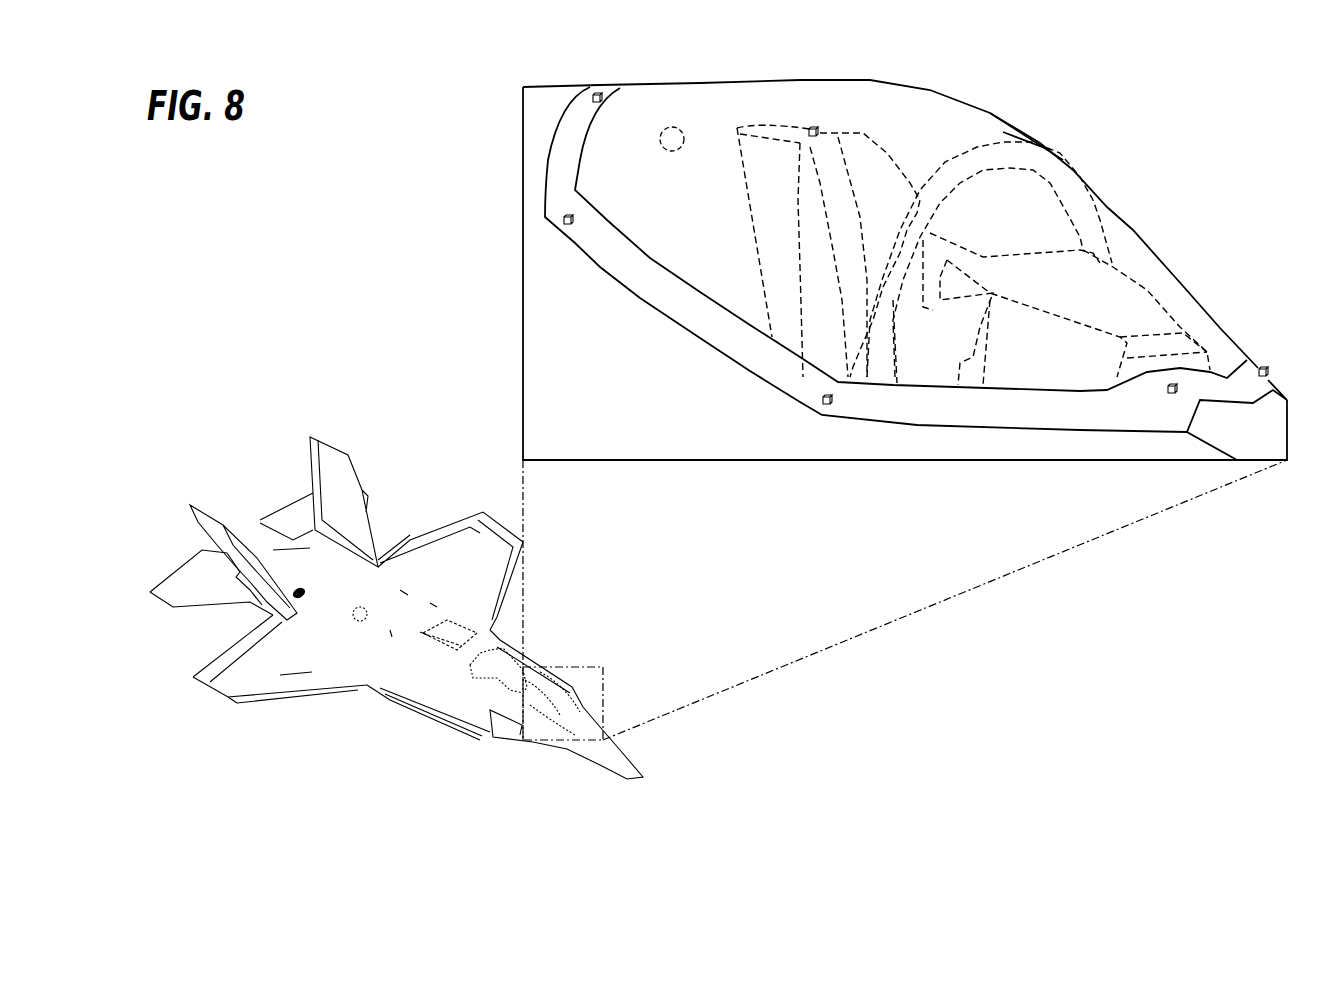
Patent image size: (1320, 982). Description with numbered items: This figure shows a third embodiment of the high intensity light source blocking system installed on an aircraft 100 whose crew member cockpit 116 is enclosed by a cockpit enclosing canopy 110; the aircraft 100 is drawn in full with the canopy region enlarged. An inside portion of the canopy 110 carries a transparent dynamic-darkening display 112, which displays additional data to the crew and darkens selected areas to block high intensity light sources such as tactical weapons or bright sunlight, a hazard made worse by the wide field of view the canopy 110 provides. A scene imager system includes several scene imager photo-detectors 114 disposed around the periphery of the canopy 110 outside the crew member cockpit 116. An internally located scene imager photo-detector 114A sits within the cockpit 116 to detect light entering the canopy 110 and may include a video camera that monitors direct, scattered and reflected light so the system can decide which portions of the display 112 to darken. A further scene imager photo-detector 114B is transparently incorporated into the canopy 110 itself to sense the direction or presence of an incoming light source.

The aircraft 100 is at (548, 313).
The cockpit enclosing canopy 110 is at (987, 112).
The transparent dynamic-darkening display 112 is at (1003, 132).
The scene imager photo-detectors 114 is at (592, 94).
The internally located scene imager photo-detector 114A is at (812, 127).
The transparently incorporated scene imager photo-detector 114B is at (672, 127).
The crew member cockpit 116 is at (983, 207).